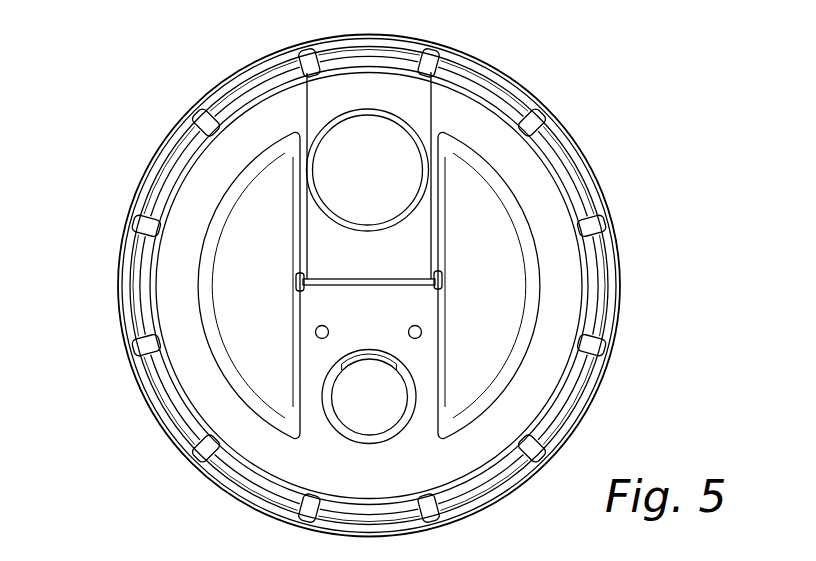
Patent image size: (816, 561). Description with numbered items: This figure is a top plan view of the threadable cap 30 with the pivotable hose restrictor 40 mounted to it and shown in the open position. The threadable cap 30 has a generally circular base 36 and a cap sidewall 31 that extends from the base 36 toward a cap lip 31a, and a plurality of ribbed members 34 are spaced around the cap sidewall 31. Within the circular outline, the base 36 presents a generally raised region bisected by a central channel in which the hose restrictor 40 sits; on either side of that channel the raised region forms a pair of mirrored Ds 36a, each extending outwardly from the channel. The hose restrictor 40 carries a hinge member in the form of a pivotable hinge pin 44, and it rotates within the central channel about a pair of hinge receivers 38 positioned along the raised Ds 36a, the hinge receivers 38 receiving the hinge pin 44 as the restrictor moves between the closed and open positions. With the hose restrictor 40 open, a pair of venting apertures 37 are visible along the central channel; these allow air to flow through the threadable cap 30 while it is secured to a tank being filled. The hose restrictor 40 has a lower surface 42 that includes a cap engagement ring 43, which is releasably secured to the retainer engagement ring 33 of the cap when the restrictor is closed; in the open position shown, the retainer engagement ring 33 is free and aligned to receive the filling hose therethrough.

The threadable cap 30 is at (108, 150).
The cap sidewall 31 is at (178, 442).
The cap lip 31a is at (573, 138).
The retainer engagement ring 33 is at (328, 417).
The ribbed member 34 is at (597, 218).
The base 36 is at (172, 273).
The mirrored Ds 36a is at (247, 362).
The venting apertures 37 is at (316, 331).
The hinge receivers 38 is at (443, 283).
The hose restrictor 40 is at (437, 78).
The lower surface 42 is at (310, 162).
The cap engagement ring 43 is at (357, 108).
The hinge pin 44 is at (425, 290).